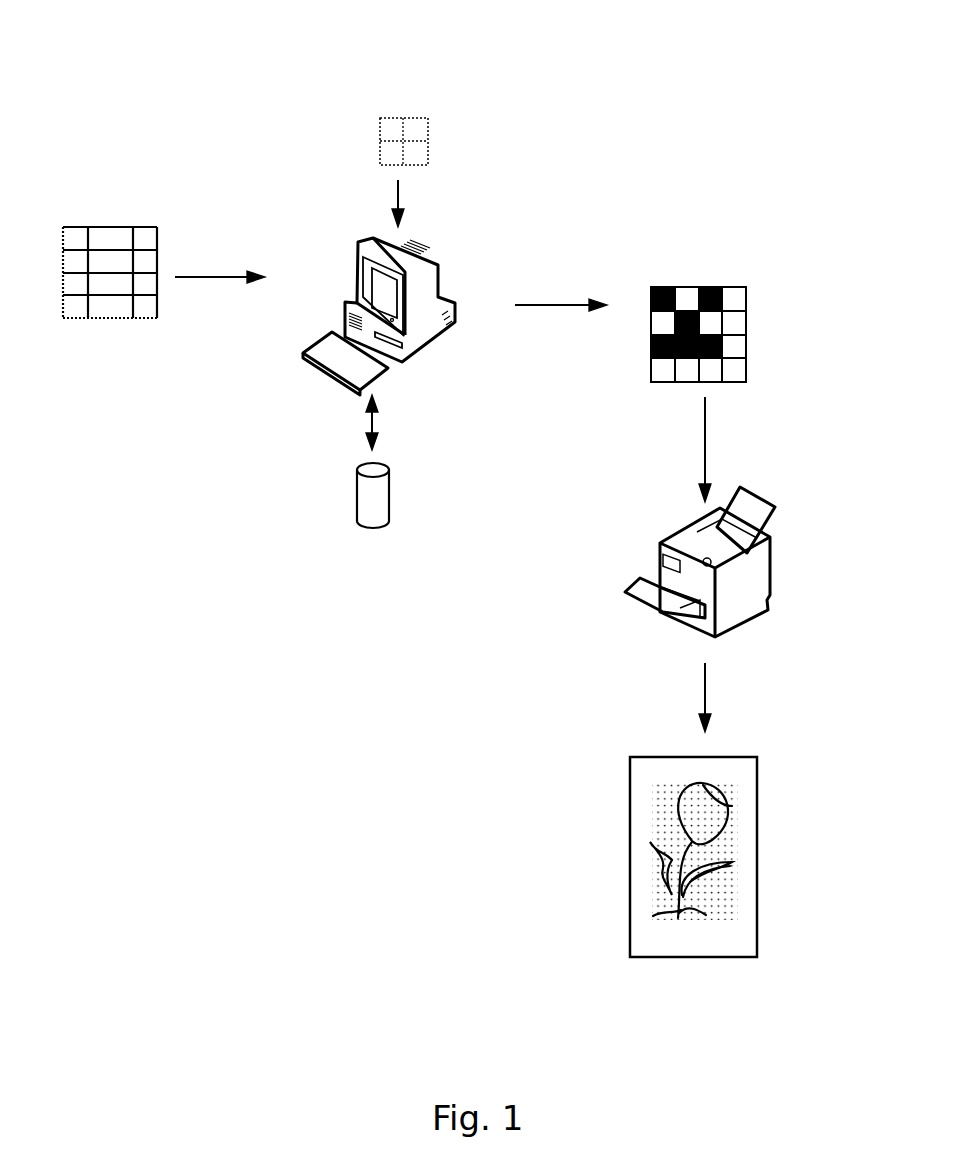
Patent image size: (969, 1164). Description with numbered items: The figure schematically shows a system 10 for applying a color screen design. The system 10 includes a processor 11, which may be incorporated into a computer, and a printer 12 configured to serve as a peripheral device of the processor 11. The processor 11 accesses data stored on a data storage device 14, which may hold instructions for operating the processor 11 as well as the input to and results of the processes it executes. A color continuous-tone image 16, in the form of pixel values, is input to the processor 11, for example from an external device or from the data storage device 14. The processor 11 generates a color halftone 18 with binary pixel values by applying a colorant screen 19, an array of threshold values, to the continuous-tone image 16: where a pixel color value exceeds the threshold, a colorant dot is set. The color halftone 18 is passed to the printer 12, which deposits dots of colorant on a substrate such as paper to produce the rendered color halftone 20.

The system 10 is at (746, 66).
The processor 11 is at (407, 243).
The printer 12 is at (762, 612).
The data storage device 14 is at (391, 498).
The color continuous-tone image 16 is at (117, 318).
The color halftone 18 is at (717, 287).
The colorant screen 19 is at (425, 118).
The rendered color halftone 20 is at (757, 792).